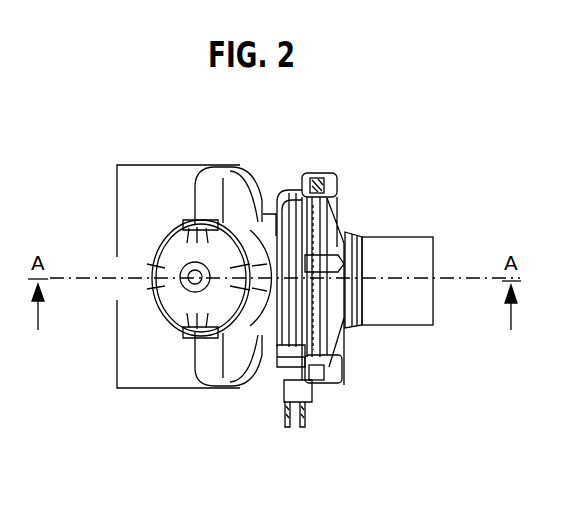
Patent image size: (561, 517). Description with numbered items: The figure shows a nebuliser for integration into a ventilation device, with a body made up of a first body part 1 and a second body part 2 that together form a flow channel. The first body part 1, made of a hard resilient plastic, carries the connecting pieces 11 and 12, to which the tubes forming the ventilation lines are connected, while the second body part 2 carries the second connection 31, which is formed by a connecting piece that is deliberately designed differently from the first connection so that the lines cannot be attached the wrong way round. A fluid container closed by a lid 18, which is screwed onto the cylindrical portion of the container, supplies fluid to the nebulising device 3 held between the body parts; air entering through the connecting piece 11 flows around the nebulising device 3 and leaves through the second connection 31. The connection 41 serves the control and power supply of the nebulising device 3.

The first body part 1 is at (186, 428).
The second body part 2 is at (395, 348).
The nebulising device 3 is at (321, 444).
The connecting piece 11 is at (135, 173).
The connecting piece 12 is at (131, 390).
The lid 18 is at (239, 228).
The second connection 31 is at (409, 242).
The connection 41 is at (285, 405).